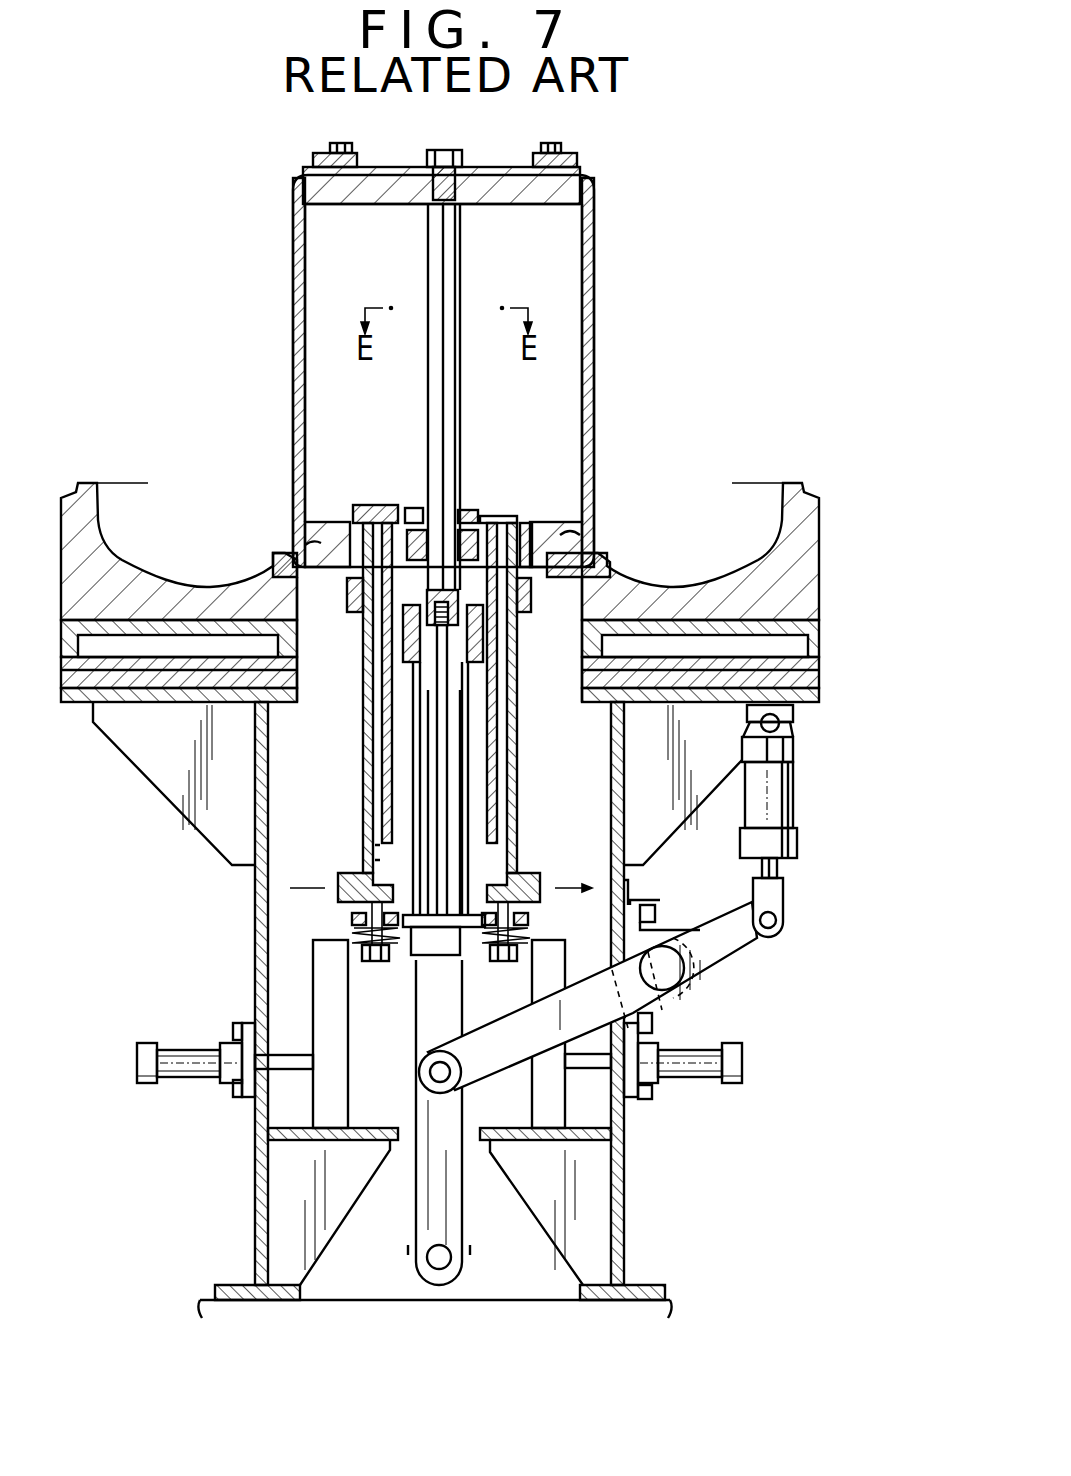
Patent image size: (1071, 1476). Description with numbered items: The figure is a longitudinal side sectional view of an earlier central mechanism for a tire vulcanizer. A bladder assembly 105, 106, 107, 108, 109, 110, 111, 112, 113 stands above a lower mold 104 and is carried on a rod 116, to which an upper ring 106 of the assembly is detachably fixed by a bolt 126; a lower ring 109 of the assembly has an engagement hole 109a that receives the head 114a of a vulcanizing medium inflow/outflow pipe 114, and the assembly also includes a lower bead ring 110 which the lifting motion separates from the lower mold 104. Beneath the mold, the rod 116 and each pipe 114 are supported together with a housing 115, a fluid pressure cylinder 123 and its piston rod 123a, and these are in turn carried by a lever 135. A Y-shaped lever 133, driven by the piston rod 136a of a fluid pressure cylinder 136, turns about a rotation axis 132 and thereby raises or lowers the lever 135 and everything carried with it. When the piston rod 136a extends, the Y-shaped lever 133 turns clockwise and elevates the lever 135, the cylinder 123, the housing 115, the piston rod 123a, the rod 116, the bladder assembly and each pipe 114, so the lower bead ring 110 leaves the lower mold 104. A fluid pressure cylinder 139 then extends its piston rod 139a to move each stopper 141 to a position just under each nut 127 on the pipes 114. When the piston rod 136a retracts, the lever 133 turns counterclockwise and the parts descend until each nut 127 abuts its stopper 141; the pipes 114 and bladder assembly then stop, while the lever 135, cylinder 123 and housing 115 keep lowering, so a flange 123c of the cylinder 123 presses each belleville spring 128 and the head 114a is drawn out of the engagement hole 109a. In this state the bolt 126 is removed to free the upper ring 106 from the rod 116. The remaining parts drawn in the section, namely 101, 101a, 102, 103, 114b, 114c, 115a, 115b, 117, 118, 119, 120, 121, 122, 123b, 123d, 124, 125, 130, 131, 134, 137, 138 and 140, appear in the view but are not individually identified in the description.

The base plate 101 is at (808, 697).
The pivot pin 101a is at (790, 722).
The insulating plate 102 is at (808, 680).
The heater plate 103 is at (812, 643).
The lower mold 104 is at (805, 552).
The bladder assembly 105 is at (594, 301).
The upper ring 106 is at (545, 205).
The bell top plate 107 is at (582, 157).
The fastening bolt 108 is at (553, 147).
The lower ring 109 is at (570, 522).
The engagement hole 109a is at (575, 535).
The lower bead ring 110 is at (560, 550).
The flange ring 111 is at (270, 558).
The flange ring 112 is at (600, 583).
The bladder assembly 113 is at (362, 525).
The vulcanizing medium inflow/outflow pipe 114 is at (362, 738).
The head 114a is at (535, 523).
The lower flange 114b is at (340, 890).
The lock washer 114c is at (350, 912).
The housing 115 is at (490, 525).
The tube lower end 115a is at (428, 975).
The tube lower portion 115b is at (415, 850).
The rod 116 is at (462, 385).
The seal 117 is at (470, 520).
The nut 118 is at (415, 505).
The nut 119 is at (405, 527).
The retainer ring 120 is at (527, 598).
The retainer ring 121 is at (352, 600).
The bolt 122 is at (335, 508).
The fluid pressure cylinder 123 is at (462, 1229).
The piston rod 123a is at (440, 797).
The shaft collar 123b is at (410, 622).
The flange 123c is at (500, 920).
The shaft pin hole 123d is at (420, 1264).
The spring 124 is at (395, 900).
The nut 125 is at (440, 198).
The bolt 126 is at (445, 150).
The nut 127 is at (375, 963).
The belleville spring 128 is at (350, 930).
The bracket 130 is at (640, 905).
The bolt 131 is at (656, 915).
The rotation axis 132 is at (672, 975).
The Y-shaped lever 133 is at (748, 945).
The pivot 134 is at (425, 1078).
The lever 135 is at (420, 1212).
The fluid pressure cylinder 136 is at (797, 795).
The piston rod 136a is at (777, 870).
The cylinder head 137 is at (796, 735).
The clevis 138 is at (785, 920).
The fluid pressure cylinder 139 is at (145, 1083).
The piston rod 139a is at (275, 1048).
The bracket 140 is at (235, 1026).
The stopper 141 is at (338, 1084).